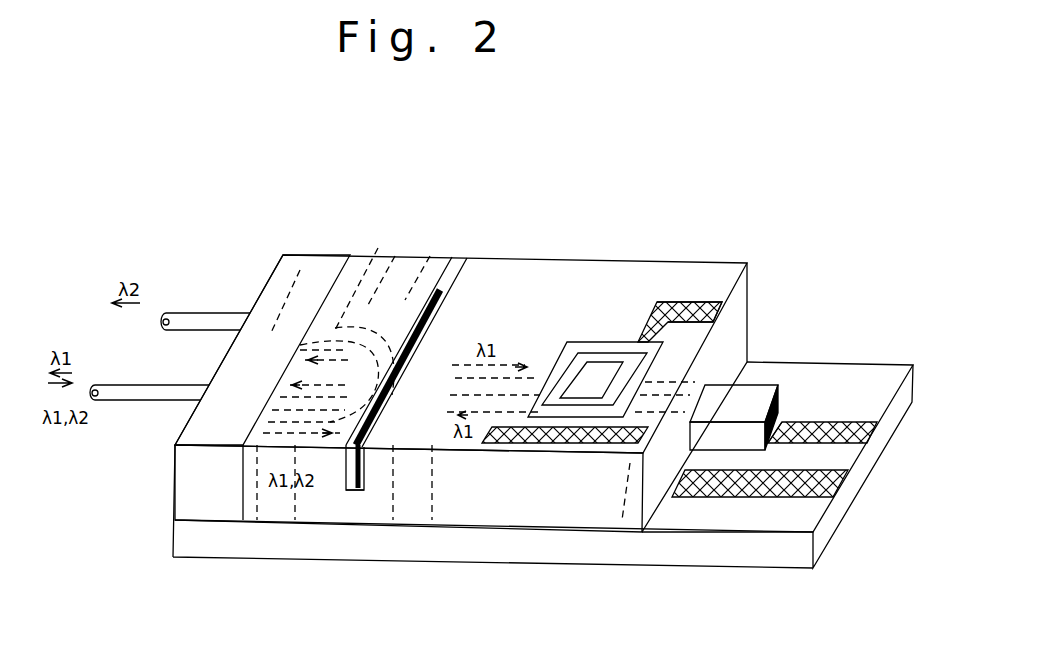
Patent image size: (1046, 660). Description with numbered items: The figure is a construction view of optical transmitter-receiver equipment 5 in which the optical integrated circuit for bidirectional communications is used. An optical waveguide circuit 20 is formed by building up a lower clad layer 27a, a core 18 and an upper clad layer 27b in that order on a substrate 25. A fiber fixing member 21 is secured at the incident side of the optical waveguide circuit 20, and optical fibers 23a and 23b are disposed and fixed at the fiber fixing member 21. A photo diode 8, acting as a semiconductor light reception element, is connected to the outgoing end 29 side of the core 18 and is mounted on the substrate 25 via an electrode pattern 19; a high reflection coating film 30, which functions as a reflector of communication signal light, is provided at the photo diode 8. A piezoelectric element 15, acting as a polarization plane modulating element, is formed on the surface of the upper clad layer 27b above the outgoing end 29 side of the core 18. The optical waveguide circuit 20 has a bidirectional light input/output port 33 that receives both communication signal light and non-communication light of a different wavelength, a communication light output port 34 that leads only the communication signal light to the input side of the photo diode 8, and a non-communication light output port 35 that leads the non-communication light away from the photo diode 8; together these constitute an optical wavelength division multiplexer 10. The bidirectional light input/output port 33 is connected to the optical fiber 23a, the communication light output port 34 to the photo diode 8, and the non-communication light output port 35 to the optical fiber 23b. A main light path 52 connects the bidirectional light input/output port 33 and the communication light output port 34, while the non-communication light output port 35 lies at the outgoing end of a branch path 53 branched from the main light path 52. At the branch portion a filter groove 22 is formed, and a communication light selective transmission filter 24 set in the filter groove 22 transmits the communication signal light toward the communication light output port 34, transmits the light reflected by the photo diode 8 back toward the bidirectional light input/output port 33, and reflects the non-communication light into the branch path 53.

The optical transmitter-receiver equipment 5 is at (688, 226).
The photo diode 8 is at (758, 397).
The optical wavelength division multiplexer 10 is at (390, 282).
The piezoelectric element 15 is at (602, 367).
The core 18 is at (378, 527).
The electrode pattern 19 is at (850, 422).
The optical waveguide circuit 20 is at (578, 292).
The fiber fixing member 21 is at (300, 282).
The filter groove 22 is at (345, 488).
The optical fiber 23a is at (120, 402).
The optical fiber 23b is at (212, 313).
The communication light selective transmission filter 24 is at (447, 308).
The substrate 25 is at (661, 560).
The lower clad layer 27a is at (683, 417).
The upper clad layer 27b is at (693, 403).
The outgoing end 29 is at (615, 463).
The high reflection coating film 30 is at (783, 407).
The bidirectional light input/output port 33 is at (252, 527).
The communication light output port 34 is at (622, 520).
The non-communication light output port 35 is at (371, 273).
The main light path 52 is at (300, 530).
The branch path 53 is at (411, 285).